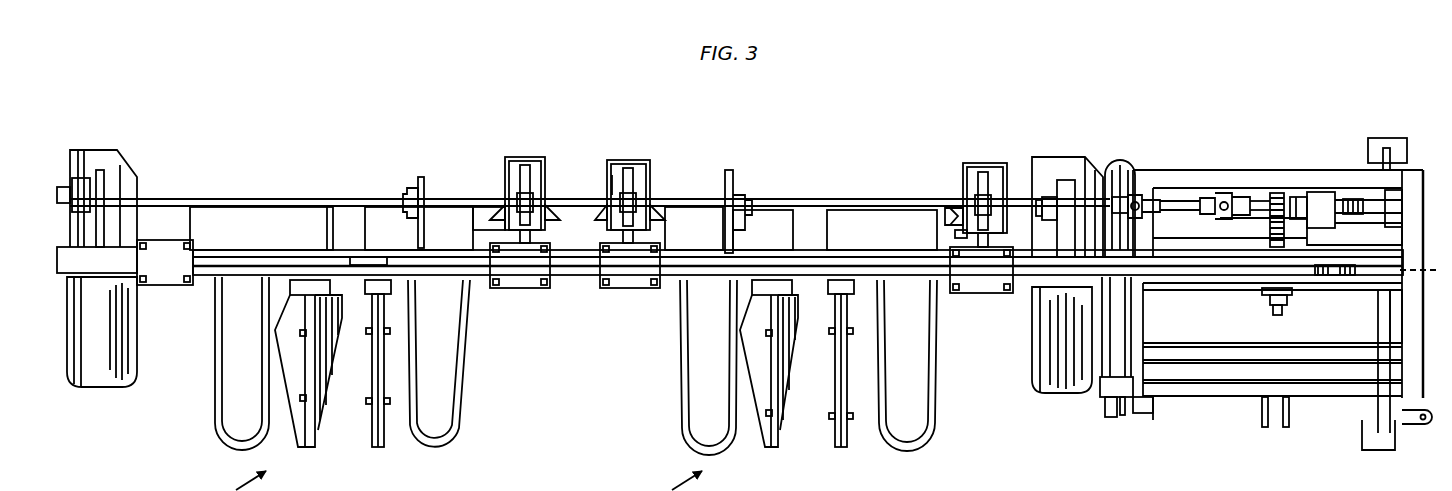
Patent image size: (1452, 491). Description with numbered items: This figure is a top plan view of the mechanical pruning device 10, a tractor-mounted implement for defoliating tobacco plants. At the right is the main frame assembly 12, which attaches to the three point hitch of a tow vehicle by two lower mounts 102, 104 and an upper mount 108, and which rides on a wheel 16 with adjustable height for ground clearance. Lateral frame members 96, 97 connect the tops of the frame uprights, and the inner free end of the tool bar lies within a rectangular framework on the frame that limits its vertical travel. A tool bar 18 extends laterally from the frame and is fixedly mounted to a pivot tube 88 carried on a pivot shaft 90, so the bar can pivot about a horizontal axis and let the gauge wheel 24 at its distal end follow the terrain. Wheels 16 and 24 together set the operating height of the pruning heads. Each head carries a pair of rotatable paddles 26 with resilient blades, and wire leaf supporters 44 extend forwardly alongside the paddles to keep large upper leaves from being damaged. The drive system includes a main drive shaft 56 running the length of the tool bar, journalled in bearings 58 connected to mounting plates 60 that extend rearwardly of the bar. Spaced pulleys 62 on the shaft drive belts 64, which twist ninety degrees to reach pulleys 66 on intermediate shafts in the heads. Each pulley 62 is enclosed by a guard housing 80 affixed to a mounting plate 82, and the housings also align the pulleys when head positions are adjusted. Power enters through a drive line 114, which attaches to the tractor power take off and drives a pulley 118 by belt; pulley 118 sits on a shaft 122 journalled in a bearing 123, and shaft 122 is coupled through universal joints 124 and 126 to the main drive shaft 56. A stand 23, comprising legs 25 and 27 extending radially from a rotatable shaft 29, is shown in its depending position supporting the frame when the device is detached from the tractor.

The mechanical pruning device 10 is at (524, 88).
The main frame assembly 12 is at (1428, 180).
The wheel 16 is at (1068, 160).
The tool bar 18 is at (220, 268).
The stand 23 is at (1377, 277).
The second wheel 24 is at (118, 158).
The leg 25 is at (1366, 424).
The rotatable paddle 26 is at (320, 418).
The leg 27 is at (1385, 150).
The shaft 29 is at (1375, 337).
The wire leaf supporter 44 is at (464, 372).
The main drive shaft 56 is at (843, 209).
The bearing 58 is at (78, 186).
The mounting plate 60 is at (425, 190).
The pulley 62 is at (612, 185).
The belt 64 is at (948, 220).
The pulley 66 is at (962, 236).
The housing 80 is at (530, 164).
The mounting plate 82 is at (650, 205).
The pivot tube 88 is at (1112, 368).
The pivot shaft 90 is at (1115, 418).
The lateral frame member 96 is at (1412, 234).
The frame member 97 is at (1235, 180).
The mount 102 is at (1152, 412).
The mount 104 is at (1412, 425).
The mount 108 is at (1268, 418).
The drive line 114 is at (1262, 300).
The pulley 118 is at (1297, 190).
The shaft 122 is at (1358, 200).
The bearing 123 is at (1320, 200).
The universal joint 124 is at (1215, 190).
The universal joint 126 is at (1135, 200).